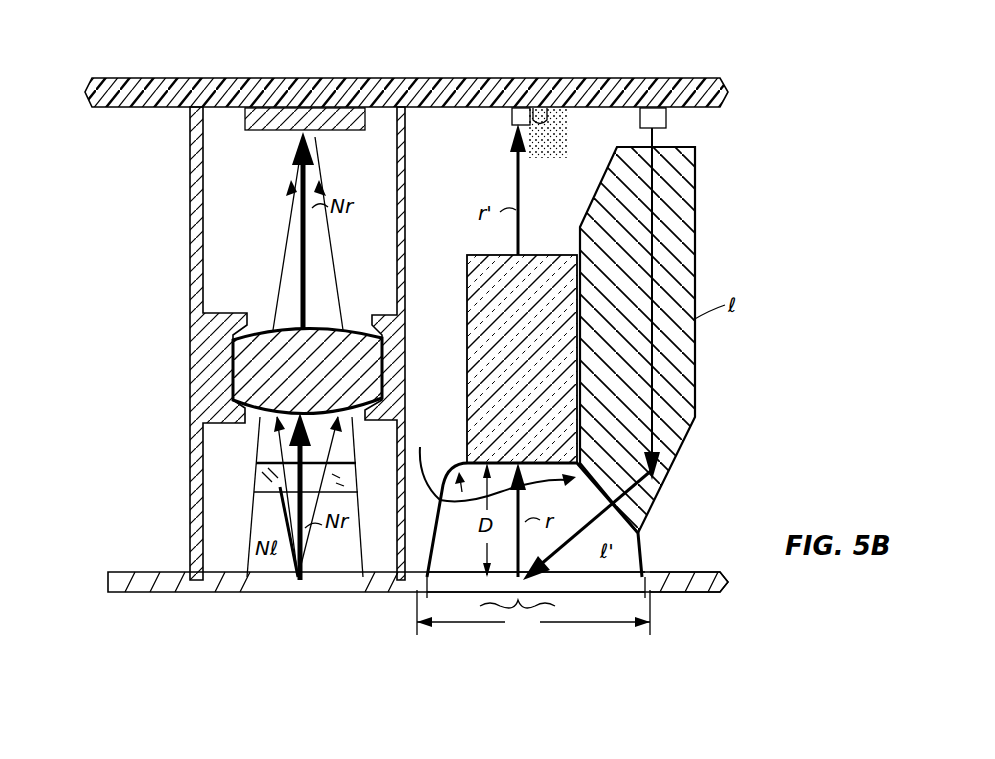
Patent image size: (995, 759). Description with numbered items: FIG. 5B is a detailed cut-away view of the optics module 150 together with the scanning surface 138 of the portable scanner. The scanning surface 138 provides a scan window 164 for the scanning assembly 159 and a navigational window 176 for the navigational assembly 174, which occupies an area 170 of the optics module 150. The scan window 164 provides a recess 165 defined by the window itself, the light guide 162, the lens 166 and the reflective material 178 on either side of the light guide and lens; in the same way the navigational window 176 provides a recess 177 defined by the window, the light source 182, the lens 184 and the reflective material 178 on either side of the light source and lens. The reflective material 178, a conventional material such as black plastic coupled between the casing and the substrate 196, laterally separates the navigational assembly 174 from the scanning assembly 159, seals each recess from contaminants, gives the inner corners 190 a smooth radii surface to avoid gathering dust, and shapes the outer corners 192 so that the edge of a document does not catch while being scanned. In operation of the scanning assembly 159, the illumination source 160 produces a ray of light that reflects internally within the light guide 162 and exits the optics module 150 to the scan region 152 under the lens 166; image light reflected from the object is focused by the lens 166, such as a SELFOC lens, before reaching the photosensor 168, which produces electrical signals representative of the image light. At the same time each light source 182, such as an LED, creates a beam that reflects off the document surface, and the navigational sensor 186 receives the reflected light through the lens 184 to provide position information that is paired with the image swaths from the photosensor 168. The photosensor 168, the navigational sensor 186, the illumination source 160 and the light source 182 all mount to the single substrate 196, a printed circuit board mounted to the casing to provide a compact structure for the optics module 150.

The scanning surface 138 is at (705, 593).
The optics module 150 is at (790, 110).
The scan region 152 is at (500, 613).
The scanning assembly 159 is at (713, 340).
The illumination source 160 is at (668, 118).
The light guide 162 is at (697, 348).
The scan window 164 is at (587, 584).
The recess 165 is at (485, 557).
The lens 166 is at (466, 346).
The photosensor 168 is at (510, 117).
The area 170 is at (298, 224).
The navigational assembly 174 is at (210, 270).
The navigational window 176 is at (348, 590).
The recess 177 is at (358, 561).
The reflective material 178 is at (407, 232).
The light source 182 is at (258, 485).
The lens 184 is at (265, 330).
The navigational sensor 186 is at (337, 130).
The inner corners 190 is at (490, 459).
The outer corners 192 is at (430, 610).
The substrate 196 is at (548, 78).